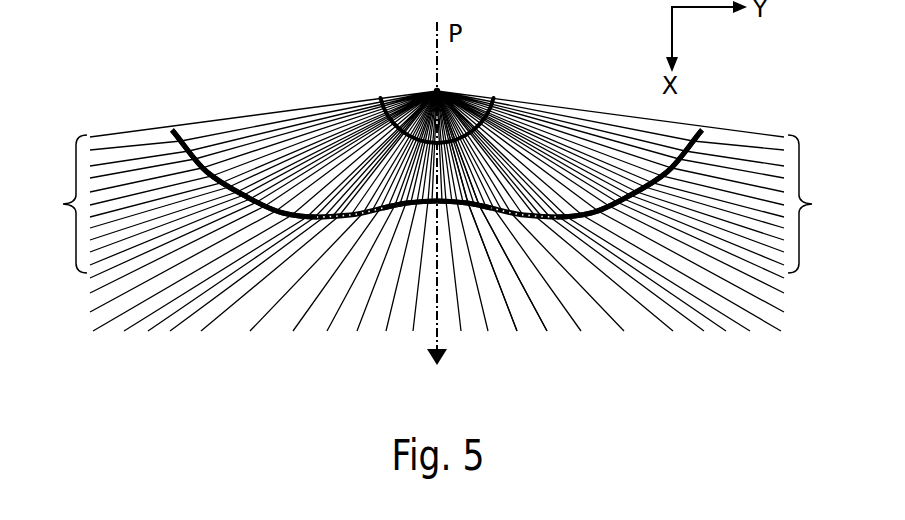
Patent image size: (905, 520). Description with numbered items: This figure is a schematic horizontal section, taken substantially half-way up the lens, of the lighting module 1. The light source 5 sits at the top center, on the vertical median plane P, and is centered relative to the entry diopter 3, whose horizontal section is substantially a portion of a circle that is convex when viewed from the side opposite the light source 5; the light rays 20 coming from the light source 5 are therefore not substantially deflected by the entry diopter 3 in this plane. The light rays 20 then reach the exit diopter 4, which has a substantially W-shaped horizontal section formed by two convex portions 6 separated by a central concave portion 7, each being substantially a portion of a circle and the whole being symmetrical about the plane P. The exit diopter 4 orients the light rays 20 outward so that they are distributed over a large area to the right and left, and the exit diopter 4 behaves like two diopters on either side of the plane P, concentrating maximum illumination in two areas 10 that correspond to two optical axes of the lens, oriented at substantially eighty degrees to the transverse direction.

The lighting module 1 is at (222, 85).
The entry diopter 3 is at (402, 100).
The exit diopter 4 is at (640, 170).
The light source 5 is at (438, 90).
The convex portions 6 is at (243, 197).
The concave portion 7 is at (416, 207).
The maximum illumination areas 10 is at (436, 204).
The light rays 20 is at (534, 278).